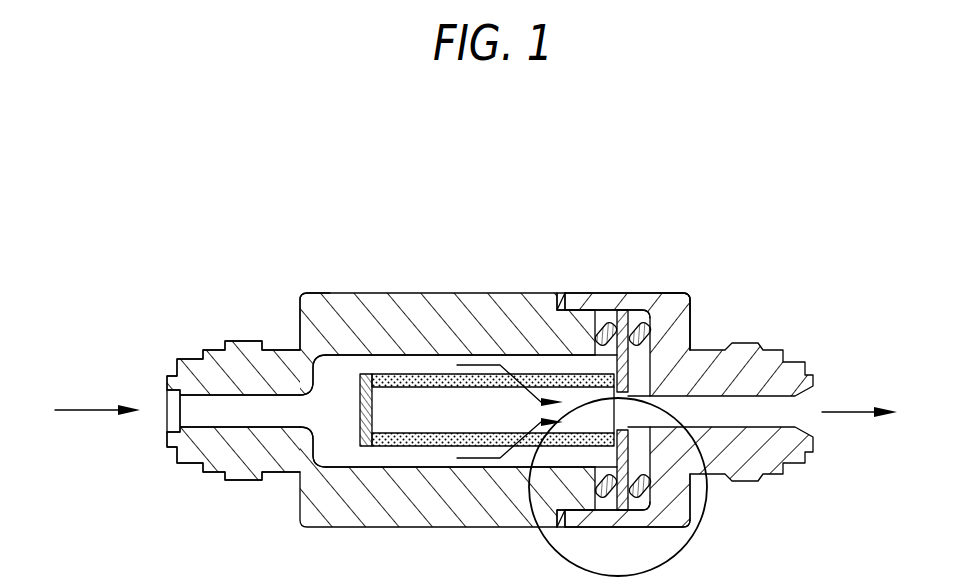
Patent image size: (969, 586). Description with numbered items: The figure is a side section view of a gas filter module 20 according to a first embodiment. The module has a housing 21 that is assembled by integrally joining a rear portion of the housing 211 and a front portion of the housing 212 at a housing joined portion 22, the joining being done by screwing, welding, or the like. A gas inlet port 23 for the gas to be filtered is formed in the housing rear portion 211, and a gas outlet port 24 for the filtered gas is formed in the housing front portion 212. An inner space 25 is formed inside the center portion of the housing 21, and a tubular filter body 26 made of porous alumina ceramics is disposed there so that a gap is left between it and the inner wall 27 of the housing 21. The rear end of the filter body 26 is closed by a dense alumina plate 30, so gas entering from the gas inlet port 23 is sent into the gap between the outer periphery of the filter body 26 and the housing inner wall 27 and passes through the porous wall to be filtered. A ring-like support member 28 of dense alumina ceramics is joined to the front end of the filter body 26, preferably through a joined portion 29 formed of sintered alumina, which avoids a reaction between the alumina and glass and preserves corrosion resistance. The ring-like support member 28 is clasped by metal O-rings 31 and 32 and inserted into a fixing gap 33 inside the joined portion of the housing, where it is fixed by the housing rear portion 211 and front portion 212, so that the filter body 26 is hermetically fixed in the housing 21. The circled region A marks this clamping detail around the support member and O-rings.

The gas filter module 20 is at (489, 283).
The housing 21 is at (430, 304).
The rear portion of the housing 211 is at (312, 307).
The front portion of the housing 212 is at (683, 296).
The housing joined portion 22 is at (558, 296).
The gas inlet port 23 is at (165, 402).
The gas outlet port 24 is at (810, 407).
The inner space 25 is at (327, 397).
The filter body 26 is at (417, 437).
The inner wall of the housing 27 is at (350, 358).
The ring-like support member 28 is at (545, 312).
The joined portion 29 is at (617, 437).
The dense alumina plate 30 is at (361, 415).
The metal O-ring 31 is at (606, 316).
The metal O-ring 32 is at (640, 314).
The fixing gap 33 is at (652, 357).
The detail region A is at (705, 518).